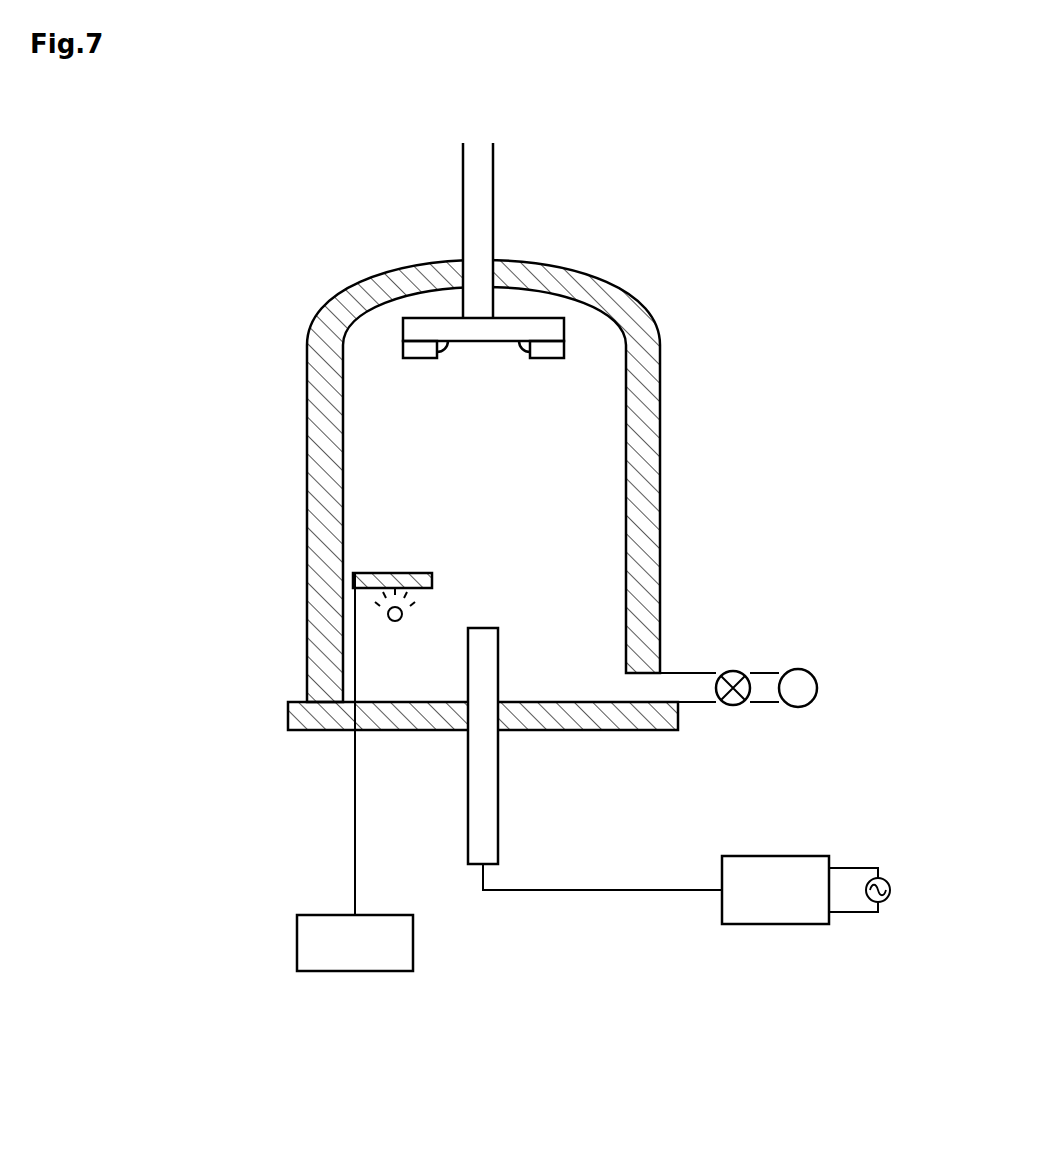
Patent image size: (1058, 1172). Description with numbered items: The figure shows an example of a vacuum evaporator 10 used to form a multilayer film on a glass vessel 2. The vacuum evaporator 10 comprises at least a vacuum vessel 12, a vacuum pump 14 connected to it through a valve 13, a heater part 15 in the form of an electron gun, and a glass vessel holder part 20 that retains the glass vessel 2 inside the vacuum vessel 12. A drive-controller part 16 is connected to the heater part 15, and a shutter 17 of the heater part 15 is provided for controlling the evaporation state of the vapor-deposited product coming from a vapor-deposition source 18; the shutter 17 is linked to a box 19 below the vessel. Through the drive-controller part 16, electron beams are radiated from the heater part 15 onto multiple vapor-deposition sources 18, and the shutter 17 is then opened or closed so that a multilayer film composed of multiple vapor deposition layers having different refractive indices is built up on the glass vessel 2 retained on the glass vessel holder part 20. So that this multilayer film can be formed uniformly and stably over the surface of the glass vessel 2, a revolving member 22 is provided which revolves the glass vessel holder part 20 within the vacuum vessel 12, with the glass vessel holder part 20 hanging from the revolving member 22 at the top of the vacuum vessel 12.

The vacuum evaporator 10 is at (712, 166).
The vacuum vessel 12 is at (661, 580).
The valve 13 is at (735, 706).
The vacuum pump 14 is at (818, 686).
The heater part 15 is at (498, 783).
The drive-controller part 16 is at (782, 925).
The shutter 17 is at (390, 572).
The vapor-deposition source 18 is at (389, 620).
The controller 19 is at (297, 945).
The glass vessel holder part 20 is at (542, 328).
The glass vessel 2 is at (557, 349).
The revolving member 22 is at (487, 183).